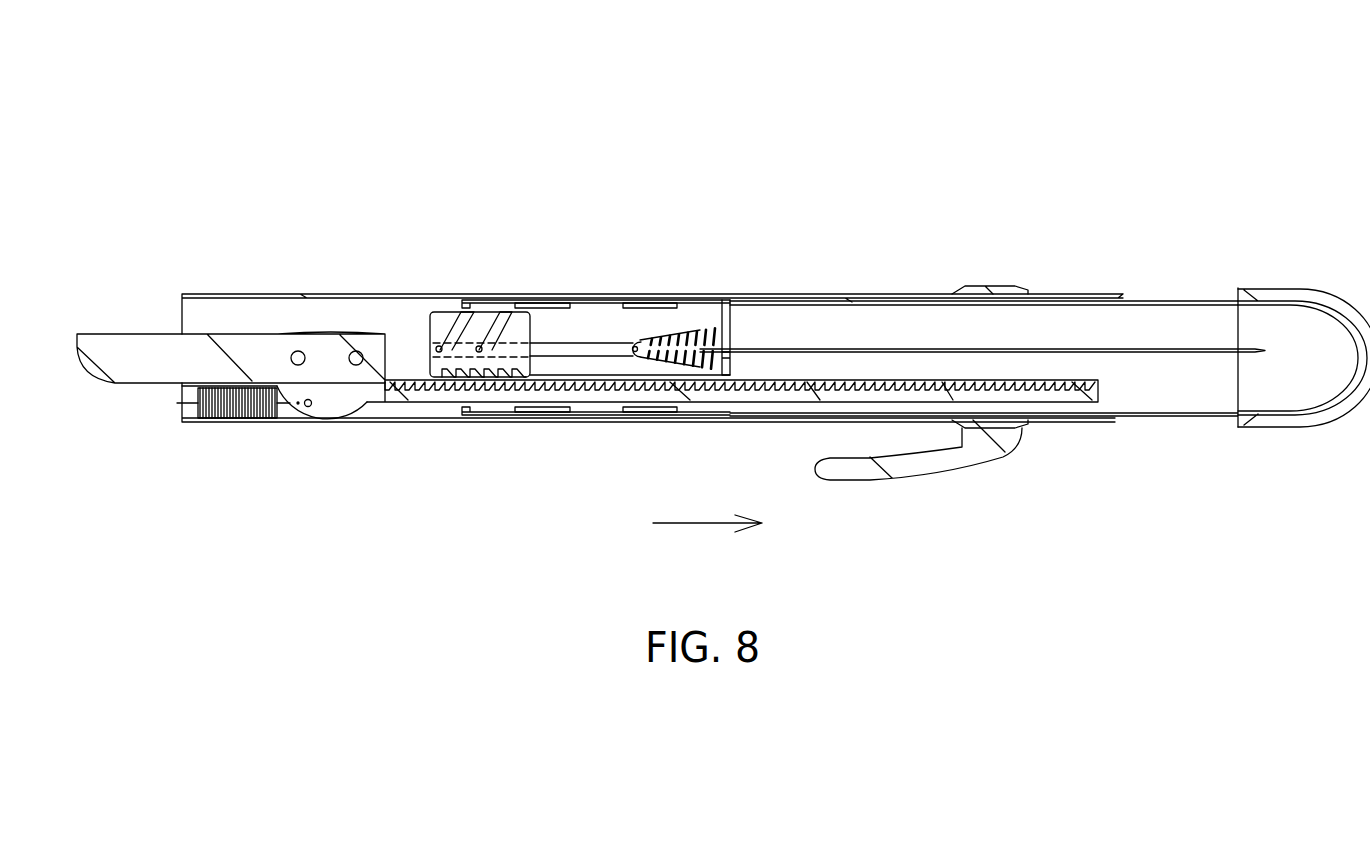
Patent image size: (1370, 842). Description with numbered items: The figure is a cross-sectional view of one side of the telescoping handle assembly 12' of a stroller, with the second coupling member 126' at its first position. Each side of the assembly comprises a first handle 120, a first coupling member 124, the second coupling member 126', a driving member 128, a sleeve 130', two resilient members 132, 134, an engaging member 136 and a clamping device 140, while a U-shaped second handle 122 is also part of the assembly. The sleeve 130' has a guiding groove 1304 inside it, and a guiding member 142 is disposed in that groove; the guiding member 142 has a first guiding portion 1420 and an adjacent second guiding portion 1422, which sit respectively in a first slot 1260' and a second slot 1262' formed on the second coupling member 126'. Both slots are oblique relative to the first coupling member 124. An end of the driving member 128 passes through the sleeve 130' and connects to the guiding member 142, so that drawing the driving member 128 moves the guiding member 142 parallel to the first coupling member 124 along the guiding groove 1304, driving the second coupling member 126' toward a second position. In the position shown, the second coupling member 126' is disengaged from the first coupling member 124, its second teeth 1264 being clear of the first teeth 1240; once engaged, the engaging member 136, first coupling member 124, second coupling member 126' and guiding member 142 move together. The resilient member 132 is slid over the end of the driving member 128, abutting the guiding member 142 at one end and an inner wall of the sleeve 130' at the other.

The telescoping handle assembly 12' is at (723, 313).
The first handle 120 is at (327, 293).
The second handle 122 is at (1155, 300).
The first coupling member 124 is at (784, 397).
The second coupling member 126' is at (458, 338).
The driving member 128 is at (880, 345).
The sleeve 130' is at (758, 311).
The resilient member 132 is at (710, 332).
The resilient member 134 is at (233, 423).
The engaging member 136 is at (137, 332).
The clamping device 140 is at (928, 467).
The guiding member 142 is at (607, 340).
The first teeth 1240 is at (398, 400).
The first slot 1260' is at (511, 279).
The second slot 1262' is at (454, 279).
The second teeth 1264 is at (553, 342).
The guiding groove 1304 is at (598, 358).
The first guiding portion 1420 is at (492, 390).
The second guiding portion 1422 is at (457, 390).